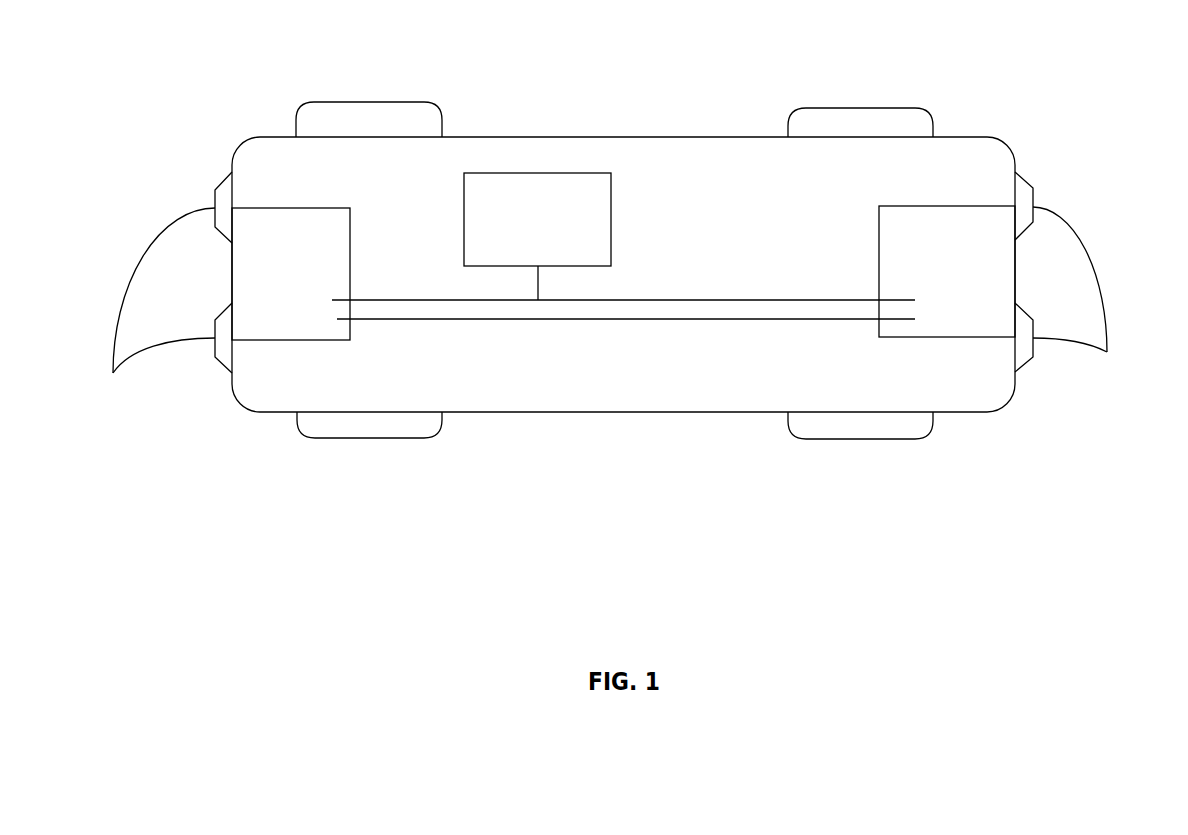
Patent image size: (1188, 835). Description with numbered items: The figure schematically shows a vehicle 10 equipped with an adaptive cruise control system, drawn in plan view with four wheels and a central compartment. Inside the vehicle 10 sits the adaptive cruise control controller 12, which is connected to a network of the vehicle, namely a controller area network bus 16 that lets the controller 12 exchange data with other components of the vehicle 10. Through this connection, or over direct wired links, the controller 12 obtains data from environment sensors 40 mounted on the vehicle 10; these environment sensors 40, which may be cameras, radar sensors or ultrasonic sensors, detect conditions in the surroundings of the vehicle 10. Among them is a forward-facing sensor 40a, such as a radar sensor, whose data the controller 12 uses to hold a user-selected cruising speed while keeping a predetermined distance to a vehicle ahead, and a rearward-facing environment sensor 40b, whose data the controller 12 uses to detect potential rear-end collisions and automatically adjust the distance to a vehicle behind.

The vehicle 10 is at (552, 137).
The adaptive cruise control controller 12 is at (570, 172).
The controller area network bus 16 is at (460, 320).
The environment sensors 40 is at (141, 184).
The forward-facing sensor 40a is at (1070, 302).
The rearward-facing environment sensor 40b is at (154, 316).